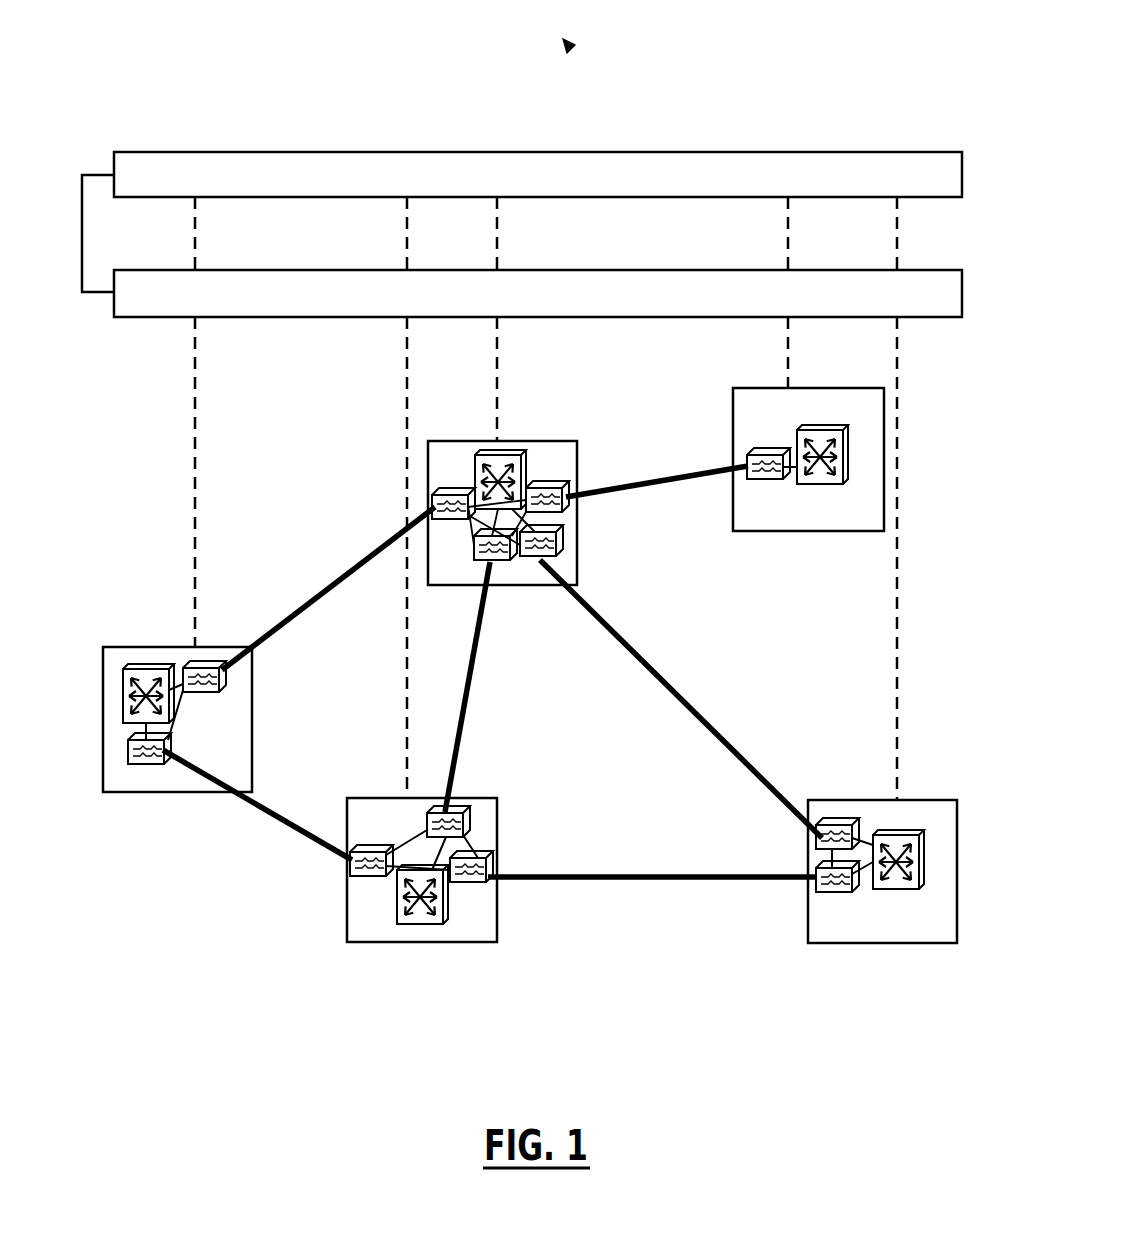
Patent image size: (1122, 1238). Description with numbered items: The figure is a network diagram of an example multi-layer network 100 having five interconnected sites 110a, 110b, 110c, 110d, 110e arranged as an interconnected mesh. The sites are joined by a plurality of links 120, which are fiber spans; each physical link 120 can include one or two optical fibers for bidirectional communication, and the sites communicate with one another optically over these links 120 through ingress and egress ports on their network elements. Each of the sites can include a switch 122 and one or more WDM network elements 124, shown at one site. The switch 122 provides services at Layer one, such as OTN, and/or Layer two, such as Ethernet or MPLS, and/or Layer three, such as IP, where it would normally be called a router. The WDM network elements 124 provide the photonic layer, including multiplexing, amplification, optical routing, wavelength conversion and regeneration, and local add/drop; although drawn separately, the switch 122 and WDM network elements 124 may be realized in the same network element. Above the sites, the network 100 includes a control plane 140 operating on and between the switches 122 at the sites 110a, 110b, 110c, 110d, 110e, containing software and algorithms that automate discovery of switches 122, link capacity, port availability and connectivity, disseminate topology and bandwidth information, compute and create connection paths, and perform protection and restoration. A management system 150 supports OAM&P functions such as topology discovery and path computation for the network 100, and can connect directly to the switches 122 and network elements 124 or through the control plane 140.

The multi-layer network 100 is at (567, 50).
The management system 150 is at (697, 152).
The control plane 140 is at (697, 270).
The site 110a is at (103, 758).
The site 110b is at (540, 441).
The site 110c is at (770, 531).
The site 110d is at (858, 943).
The site 110e is at (347, 920).
The link 120 is at (320, 597).
The switch 122 is at (828, 428).
The WDM network element 124 is at (768, 452).